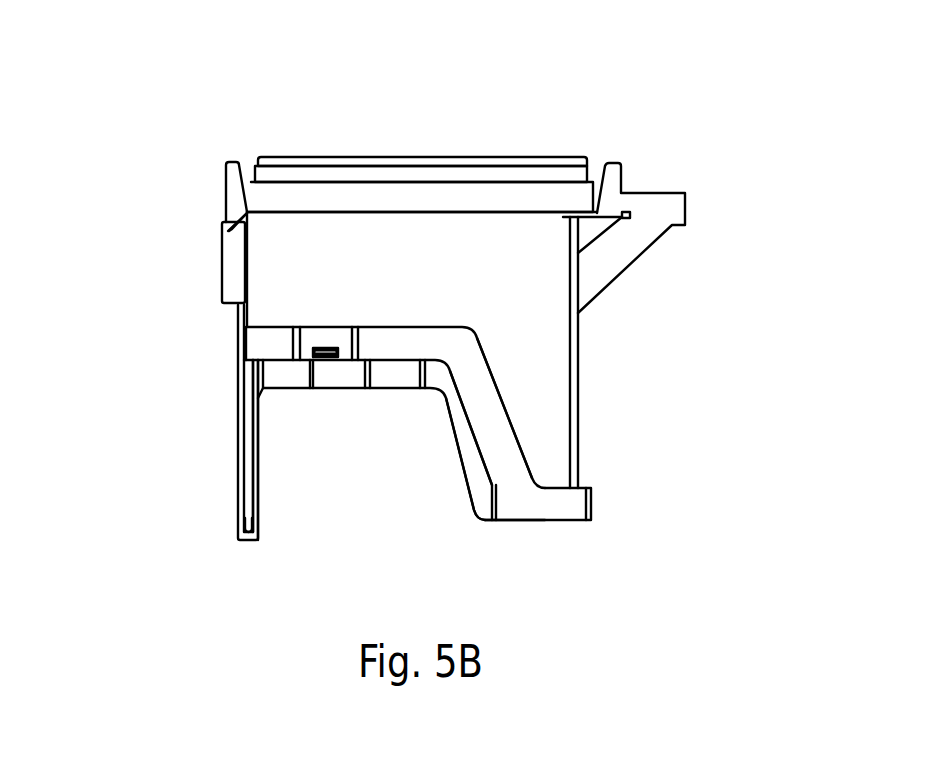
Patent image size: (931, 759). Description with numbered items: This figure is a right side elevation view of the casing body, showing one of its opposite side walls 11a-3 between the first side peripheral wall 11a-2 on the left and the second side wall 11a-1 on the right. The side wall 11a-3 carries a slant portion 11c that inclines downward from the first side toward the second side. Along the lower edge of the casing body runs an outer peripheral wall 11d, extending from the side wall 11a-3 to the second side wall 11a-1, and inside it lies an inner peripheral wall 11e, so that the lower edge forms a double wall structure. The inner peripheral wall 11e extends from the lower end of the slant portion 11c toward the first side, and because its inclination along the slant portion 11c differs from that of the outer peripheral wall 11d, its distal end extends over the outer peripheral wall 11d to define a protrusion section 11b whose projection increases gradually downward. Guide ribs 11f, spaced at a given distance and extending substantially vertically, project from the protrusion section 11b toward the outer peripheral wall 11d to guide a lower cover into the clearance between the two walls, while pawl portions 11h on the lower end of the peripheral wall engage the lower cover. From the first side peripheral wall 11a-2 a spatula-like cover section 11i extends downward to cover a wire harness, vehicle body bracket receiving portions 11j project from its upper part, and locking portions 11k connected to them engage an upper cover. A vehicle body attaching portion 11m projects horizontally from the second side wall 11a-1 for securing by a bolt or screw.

The second side wall 11a-1 is at (578, 357).
The first side peripheral wall 11a-2 is at (247, 313).
The side wall 11a-3 is at (390, 247).
The protrusion section 11b is at (478, 493).
The slant portion 11c is at (497, 440).
The outer peripheral wall 11d is at (280, 348).
The inner peripheral wall 11e is at (278, 377).
The guide rib 11f is at (313, 370).
The pawl portion 11h is at (310, 355).
The cover section 11i is at (248, 500).
The vehicle body bracket receiving portion 11j is at (238, 250).
The locking portion 11k is at (238, 185).
The vehicle body attaching portion 11m is at (637, 233).